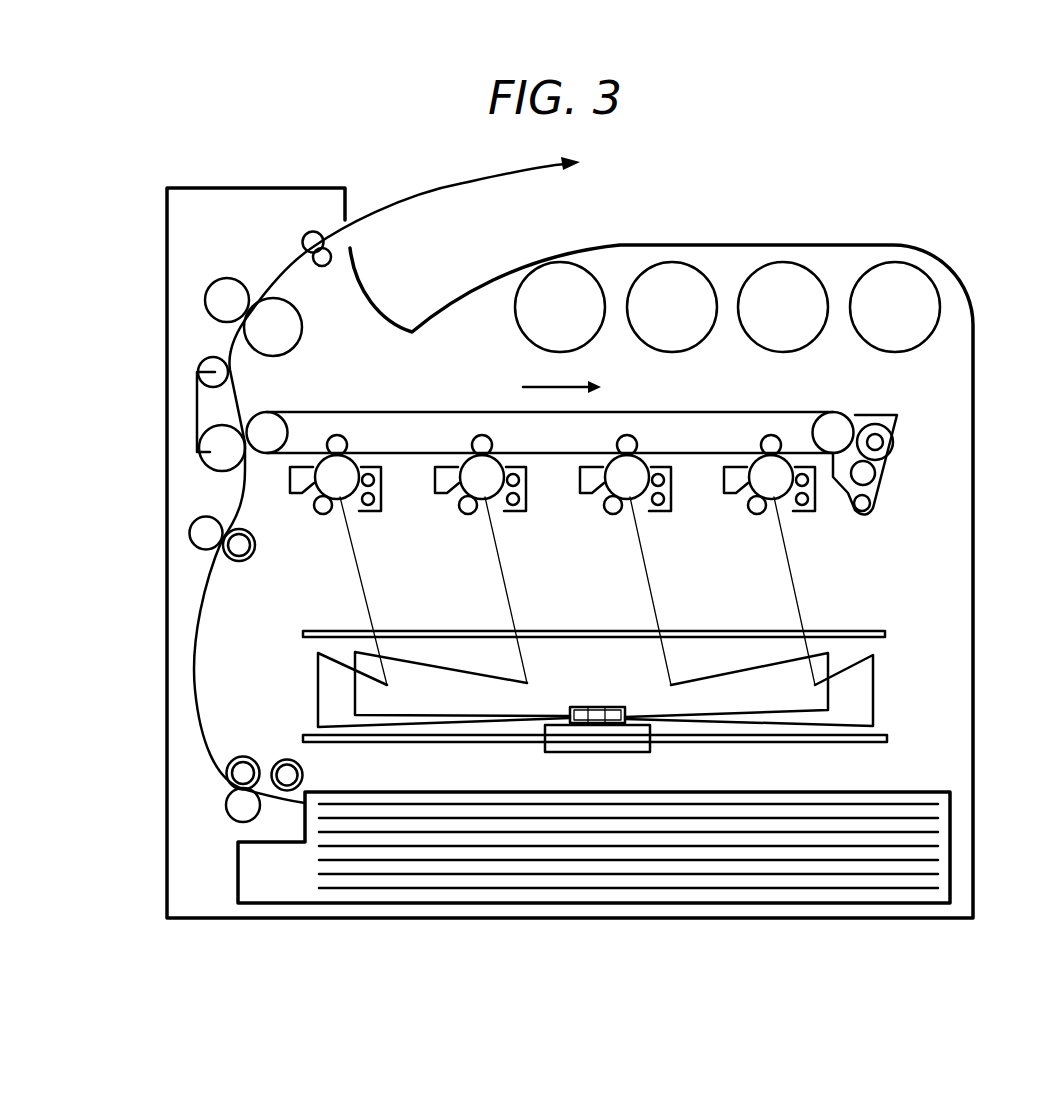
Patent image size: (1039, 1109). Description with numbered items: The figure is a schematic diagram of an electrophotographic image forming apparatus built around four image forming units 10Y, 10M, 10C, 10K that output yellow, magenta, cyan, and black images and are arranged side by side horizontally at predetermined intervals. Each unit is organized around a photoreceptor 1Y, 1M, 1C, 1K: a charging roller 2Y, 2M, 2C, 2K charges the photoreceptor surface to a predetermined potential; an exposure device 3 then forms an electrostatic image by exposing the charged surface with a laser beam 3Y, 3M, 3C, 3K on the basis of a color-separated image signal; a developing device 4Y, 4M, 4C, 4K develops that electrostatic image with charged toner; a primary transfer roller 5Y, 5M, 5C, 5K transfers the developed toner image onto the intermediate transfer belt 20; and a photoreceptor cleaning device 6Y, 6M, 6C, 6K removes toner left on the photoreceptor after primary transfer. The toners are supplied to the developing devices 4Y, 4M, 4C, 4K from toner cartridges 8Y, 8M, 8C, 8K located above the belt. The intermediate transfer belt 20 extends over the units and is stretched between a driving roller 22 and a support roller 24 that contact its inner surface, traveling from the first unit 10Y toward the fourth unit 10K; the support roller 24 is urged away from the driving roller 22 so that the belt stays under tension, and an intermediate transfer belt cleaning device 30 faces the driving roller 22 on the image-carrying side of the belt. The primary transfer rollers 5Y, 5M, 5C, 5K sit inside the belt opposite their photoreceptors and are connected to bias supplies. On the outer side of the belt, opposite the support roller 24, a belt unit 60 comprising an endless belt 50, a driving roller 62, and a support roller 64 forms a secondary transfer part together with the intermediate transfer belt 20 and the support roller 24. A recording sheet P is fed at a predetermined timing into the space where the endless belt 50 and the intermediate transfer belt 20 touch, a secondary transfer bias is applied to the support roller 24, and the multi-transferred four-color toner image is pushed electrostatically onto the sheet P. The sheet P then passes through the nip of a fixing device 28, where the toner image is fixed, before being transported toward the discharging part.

The fixing device 28 is at (287, 297).
The belt unit 60 is at (155, 414).
The support roller 64 is at (207, 373).
The endless belt 50 is at (197, 410).
The driving roller 62 is at (180, 448).
The support roller 24 is at (263, 420).
The intermediate transfer belt 20 is at (718, 411).
The driving roller 22 is at (835, 417).
The intermediate transfer belt cleaning device 30 is at (898, 418).
The toner cartridge 8K is at (559, 283).
The toner cartridge 8C is at (671, 283).
The toner cartridge 8M is at (782, 283).
The toner cartridge 8Y is at (894, 283).
The primary transfer roller 5K is at (348, 440).
The primary transfer roller 5C is at (493, 440).
The primary transfer roller 5M is at (638, 440).
The primary transfer roller 5Y is at (776, 435).
The photoreceptor 1K is at (345, 497).
The photoreceptor 1C is at (490, 497).
The photoreceptor 1M is at (635, 497).
The photoreceptor 1Y is at (779, 497).
The charging roller 2K is at (323, 514).
The charging roller 2C is at (468, 514).
The charging roller 2M is at (613, 514).
The charging roller 2Y is at (757, 514).
The developing device 4K is at (384, 514).
The developing device 4C is at (529, 514).
The developing device 4M is at (675, 514).
The developing device 4Y is at (817, 514).
The photoreceptor cleaning device 6K is at (290, 490).
The photoreceptor cleaning device 6C is at (435, 490).
The photoreceptor cleaning device 6M is at (580, 490).
The photoreceptor cleaning device 6Y is at (724, 490).
The image forming unit 10K is at (348, 541).
The image forming unit 10C is at (493, 541).
The image forming unit 10M is at (639, 541).
The image forming unit 10Y is at (781, 541).
The exposure device 3 is at (600, 638).
The laser beam 3K is at (318, 682).
The laser beam 3C is at (417, 665).
The laser beam 3M is at (728, 672).
The laser beam 3Y is at (877, 684).
The recording sheet P is at (923, 855).